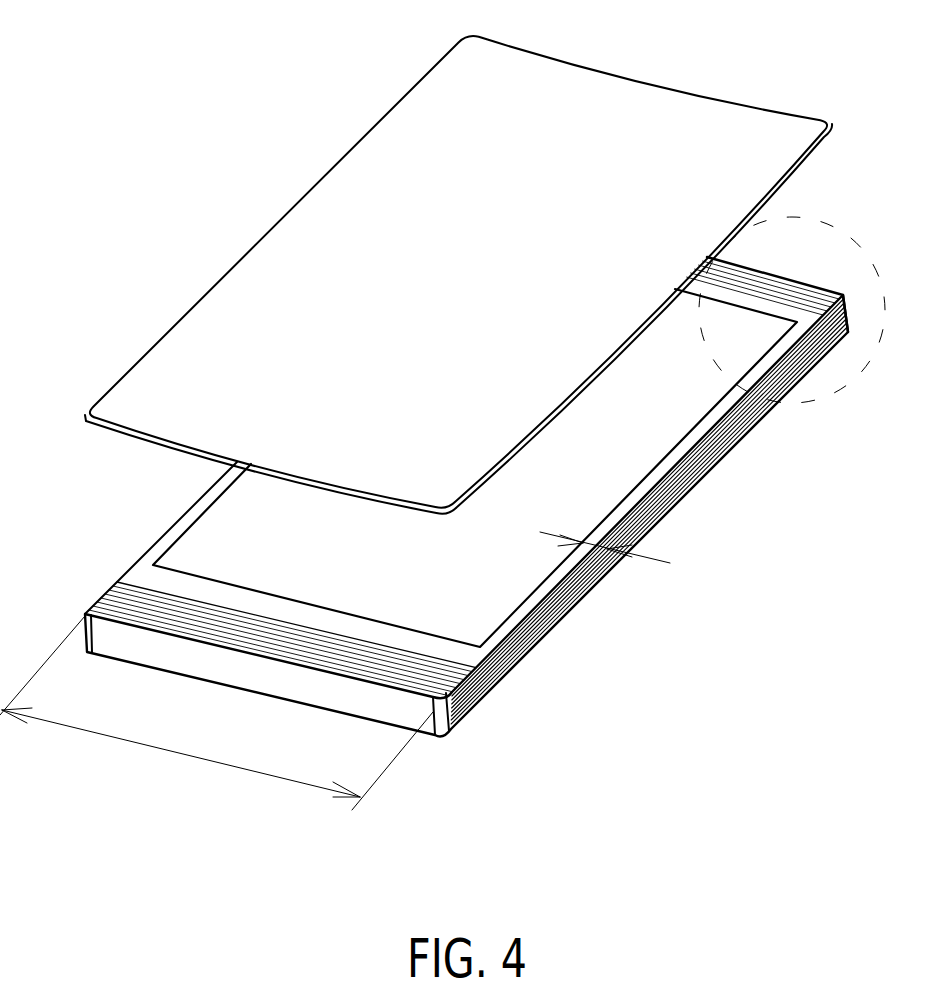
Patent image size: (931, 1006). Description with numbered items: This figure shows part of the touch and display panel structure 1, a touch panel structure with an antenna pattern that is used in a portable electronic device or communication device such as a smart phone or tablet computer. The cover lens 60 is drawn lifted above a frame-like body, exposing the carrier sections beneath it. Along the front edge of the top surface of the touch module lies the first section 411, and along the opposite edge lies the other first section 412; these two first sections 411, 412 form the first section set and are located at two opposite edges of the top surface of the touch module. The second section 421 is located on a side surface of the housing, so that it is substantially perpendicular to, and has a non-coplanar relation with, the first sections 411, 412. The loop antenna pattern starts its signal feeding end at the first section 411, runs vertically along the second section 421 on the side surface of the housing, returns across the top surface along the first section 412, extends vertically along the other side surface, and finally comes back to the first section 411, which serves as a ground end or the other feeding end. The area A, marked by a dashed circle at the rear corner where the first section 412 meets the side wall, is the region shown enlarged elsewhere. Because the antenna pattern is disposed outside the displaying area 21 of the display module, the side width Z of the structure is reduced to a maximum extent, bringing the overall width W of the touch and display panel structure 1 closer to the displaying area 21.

The touch and display panel structure 1 is at (283, 74).
The cover lens 60 is at (678, 92).
The first section 411 is at (250, 639).
The first section 412 is at (762, 298).
The displaying area 21 is at (682, 420).
The second section 421 is at (685, 495).
The area A is at (831, 230).
The side width Z is at (598, 548).
The width W is at (216, 713).